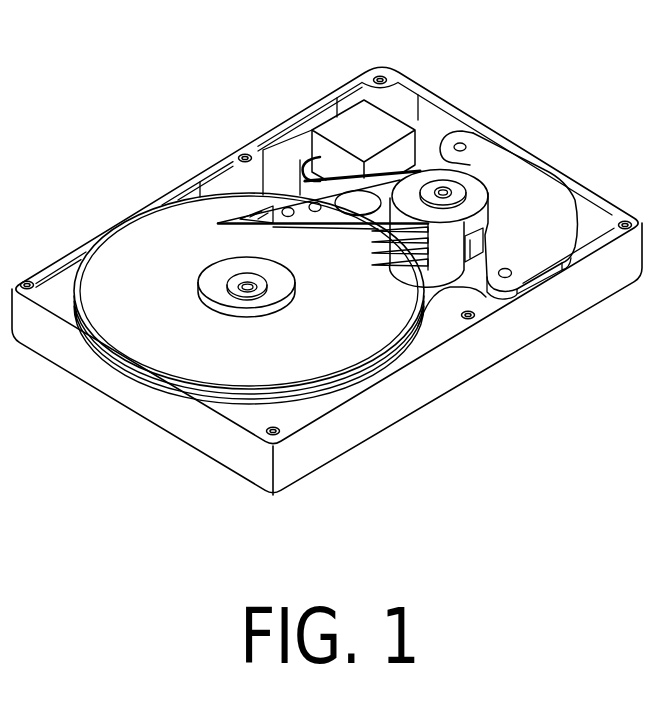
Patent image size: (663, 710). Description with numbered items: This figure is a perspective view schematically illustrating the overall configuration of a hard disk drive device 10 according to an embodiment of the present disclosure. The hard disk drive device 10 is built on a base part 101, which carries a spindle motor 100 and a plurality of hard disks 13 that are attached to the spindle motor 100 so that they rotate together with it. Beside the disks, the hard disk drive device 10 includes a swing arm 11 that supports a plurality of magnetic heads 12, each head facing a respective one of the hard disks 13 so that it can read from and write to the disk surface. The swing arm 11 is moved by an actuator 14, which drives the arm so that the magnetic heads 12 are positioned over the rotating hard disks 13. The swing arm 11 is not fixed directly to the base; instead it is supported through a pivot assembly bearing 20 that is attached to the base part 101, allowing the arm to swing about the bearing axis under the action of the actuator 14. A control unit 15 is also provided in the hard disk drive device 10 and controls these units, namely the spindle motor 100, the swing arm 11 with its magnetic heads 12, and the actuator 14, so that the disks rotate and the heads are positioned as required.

The hard disk drive device 10 is at (91, 149).
The swing arm 11 is at (328, 209).
The magnetic heads 12 is at (242, 215).
The hard disks 13 is at (140, 338).
The actuator 14 is at (522, 193).
The control unit 15 is at (385, 127).
The pivot assembly bearing 20 is at (447, 192).
The spindle motor 100 is at (220, 291).
The base part 101 is at (462, 364).